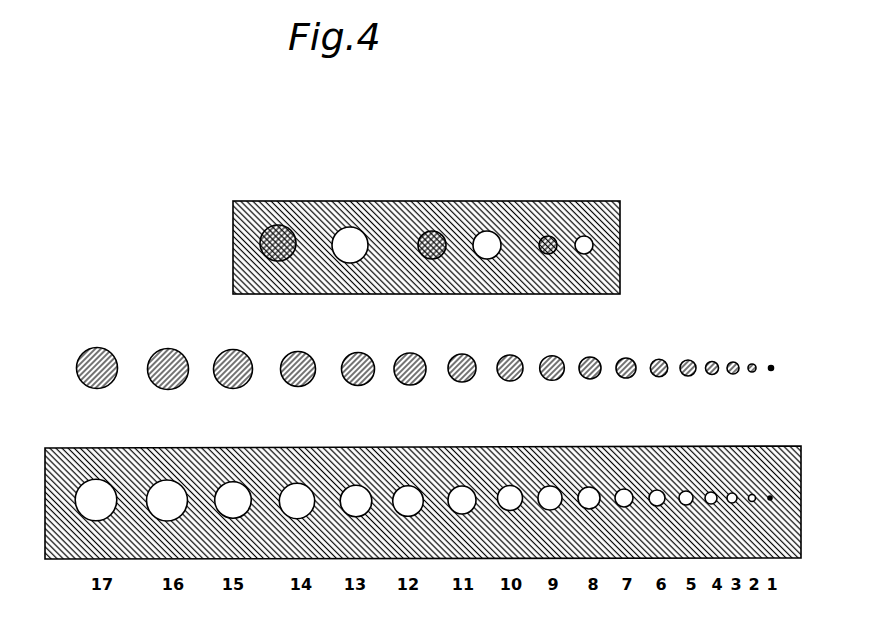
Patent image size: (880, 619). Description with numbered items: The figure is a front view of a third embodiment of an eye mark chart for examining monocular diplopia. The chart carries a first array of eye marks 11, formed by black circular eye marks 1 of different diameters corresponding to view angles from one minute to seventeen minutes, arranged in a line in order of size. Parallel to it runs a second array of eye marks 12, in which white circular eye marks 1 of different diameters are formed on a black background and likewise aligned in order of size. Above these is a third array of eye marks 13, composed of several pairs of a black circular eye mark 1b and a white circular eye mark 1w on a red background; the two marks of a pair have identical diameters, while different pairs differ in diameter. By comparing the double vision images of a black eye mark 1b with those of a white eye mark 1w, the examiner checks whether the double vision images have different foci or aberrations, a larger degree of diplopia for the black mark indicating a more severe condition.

The circular eye mark 1 is at (93, 358).
The black circular eye mark 1b is at (272, 243).
The white circular eye mark 1w is at (353, 243).
The first array of eye marks 11 is at (194, 342).
The second array of eye marks 12 is at (86, 461).
The third array of eye marks 13 is at (389, 206).